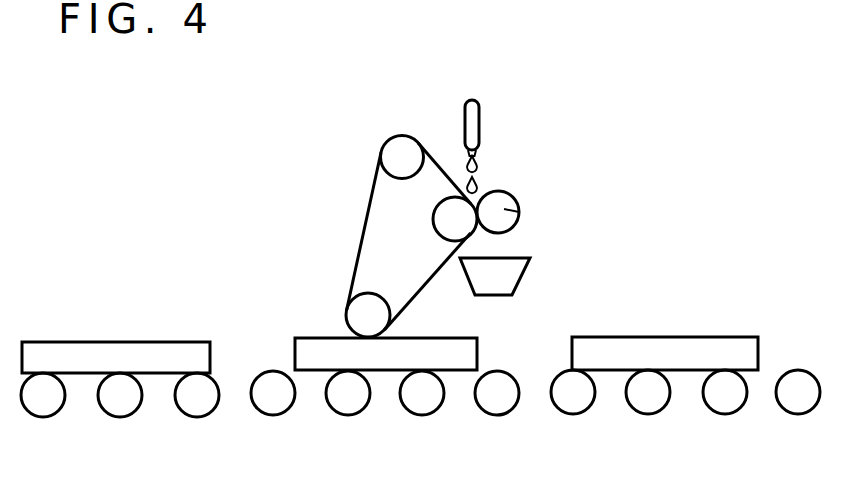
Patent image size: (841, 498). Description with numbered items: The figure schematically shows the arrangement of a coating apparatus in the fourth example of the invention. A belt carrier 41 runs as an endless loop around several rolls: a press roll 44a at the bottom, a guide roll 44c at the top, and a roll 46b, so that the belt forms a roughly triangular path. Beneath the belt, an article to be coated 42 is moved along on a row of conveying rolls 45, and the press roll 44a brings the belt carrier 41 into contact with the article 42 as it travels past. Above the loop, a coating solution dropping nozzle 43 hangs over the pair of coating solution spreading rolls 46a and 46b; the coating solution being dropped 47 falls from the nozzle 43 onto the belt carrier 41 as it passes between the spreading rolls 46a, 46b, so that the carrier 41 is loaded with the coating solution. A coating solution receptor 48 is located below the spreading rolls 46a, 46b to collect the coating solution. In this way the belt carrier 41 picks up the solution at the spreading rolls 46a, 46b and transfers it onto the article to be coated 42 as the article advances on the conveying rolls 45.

The belt carrier 41 is at (360, 243).
The article to be coated 42 is at (123, 341).
The coating solution dropping nozzle 43 is at (479, 121).
The press roll 44a is at (365, 317).
The guide roll 44c is at (398, 152).
The conveying rolls 45 is at (263, 415).
The coating solution spreading roll 46a is at (519, 212).
The coating solution spreading roll 46b is at (452, 220).
The coating solution being dropped 47 is at (480, 160).
The coating solution receptor 48 is at (510, 276).